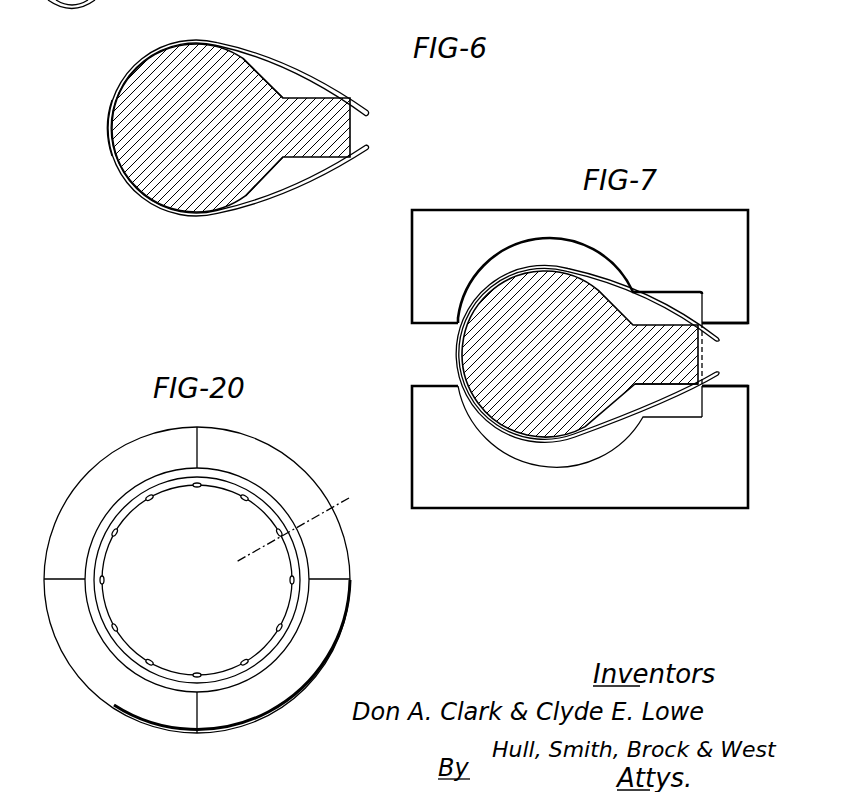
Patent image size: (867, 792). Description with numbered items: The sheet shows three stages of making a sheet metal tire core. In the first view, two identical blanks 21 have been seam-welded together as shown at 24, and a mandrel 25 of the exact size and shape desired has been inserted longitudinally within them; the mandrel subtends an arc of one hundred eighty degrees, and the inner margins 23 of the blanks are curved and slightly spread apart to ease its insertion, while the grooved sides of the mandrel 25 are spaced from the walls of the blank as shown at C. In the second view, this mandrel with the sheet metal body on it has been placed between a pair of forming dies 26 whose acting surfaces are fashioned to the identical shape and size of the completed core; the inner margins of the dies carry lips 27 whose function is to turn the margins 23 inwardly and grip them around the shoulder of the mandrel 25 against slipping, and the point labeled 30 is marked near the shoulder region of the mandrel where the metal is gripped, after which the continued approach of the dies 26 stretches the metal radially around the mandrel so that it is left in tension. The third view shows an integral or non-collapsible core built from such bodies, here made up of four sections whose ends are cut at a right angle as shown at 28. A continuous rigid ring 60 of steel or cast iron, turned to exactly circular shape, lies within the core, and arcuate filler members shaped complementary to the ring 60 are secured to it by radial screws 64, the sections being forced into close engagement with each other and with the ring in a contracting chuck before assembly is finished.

In FIG. 6, the blank 21 is at (188, 44).
In FIG. 7, the blank 21 is at (587, 353).
In FIG. 20, the blank 21 is at (372, 495).
In FIG. 6, the inner margin of the blank 23 is at (370, 112).
In FIG. 7, the inner margin of the blank 23 is at (720, 351).
In FIG. 6, the seam weld 24 is at (110, 125).
In FIG. 6, the mandrel 25 is at (232, 167).
In FIG. 7, the mandrel 25 is at (492, 342).
In FIG. 7, the forming die 26 is at (488, 224).
In FIG. 7, the lip 27 is at (737, 317).
In FIG. 20, the cut end of the blank 28 is at (200, 448).
In FIG. 7, the shoulder 30 is at (672, 385).
In FIG. 20, the ring 60 is at (109, 603).
In FIG. 20, the radial screw 64 is at (153, 500).
In FIG. 6, the space C is at (287, 80).